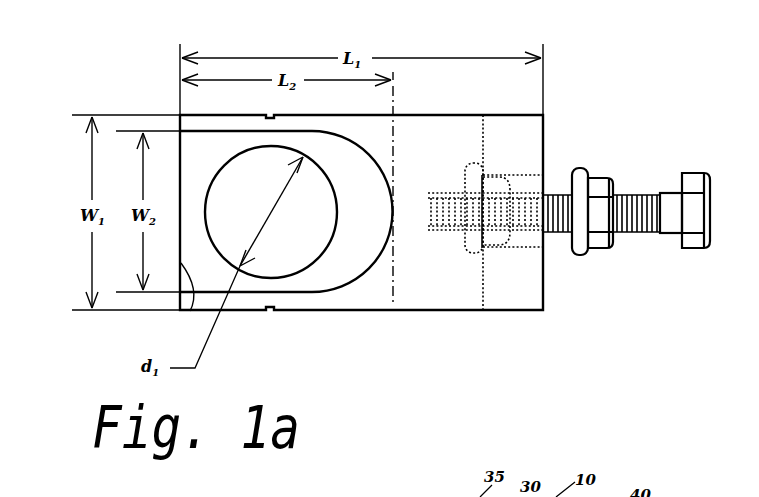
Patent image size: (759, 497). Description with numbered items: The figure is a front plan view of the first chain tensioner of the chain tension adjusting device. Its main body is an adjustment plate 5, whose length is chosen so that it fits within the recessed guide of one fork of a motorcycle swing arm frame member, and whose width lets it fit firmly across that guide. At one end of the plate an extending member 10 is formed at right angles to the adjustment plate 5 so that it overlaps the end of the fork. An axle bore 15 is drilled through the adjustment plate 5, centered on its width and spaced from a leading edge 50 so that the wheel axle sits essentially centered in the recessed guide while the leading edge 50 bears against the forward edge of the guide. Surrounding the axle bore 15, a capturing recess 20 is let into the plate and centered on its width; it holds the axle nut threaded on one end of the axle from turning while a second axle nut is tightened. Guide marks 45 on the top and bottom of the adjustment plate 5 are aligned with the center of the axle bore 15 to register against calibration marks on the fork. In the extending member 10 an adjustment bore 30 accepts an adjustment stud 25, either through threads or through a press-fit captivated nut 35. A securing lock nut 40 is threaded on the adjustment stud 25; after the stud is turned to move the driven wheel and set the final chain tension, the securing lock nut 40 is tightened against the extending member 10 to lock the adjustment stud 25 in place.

The adjustment plate 5 is at (285, 312).
The extending member 10 is at (487, 282).
The axle bore 15 is at (308, 265).
The capturing recess 20 is at (372, 267).
The adjustment stud 25 is at (660, 194).
The adjustment bore 30 is at (519, 248).
The captivated nut 35 is at (466, 183).
The securing lock nut 40 is at (593, 177).
The guide marks 45 is at (269, 113).
The leading edge 50 is at (191, 312).